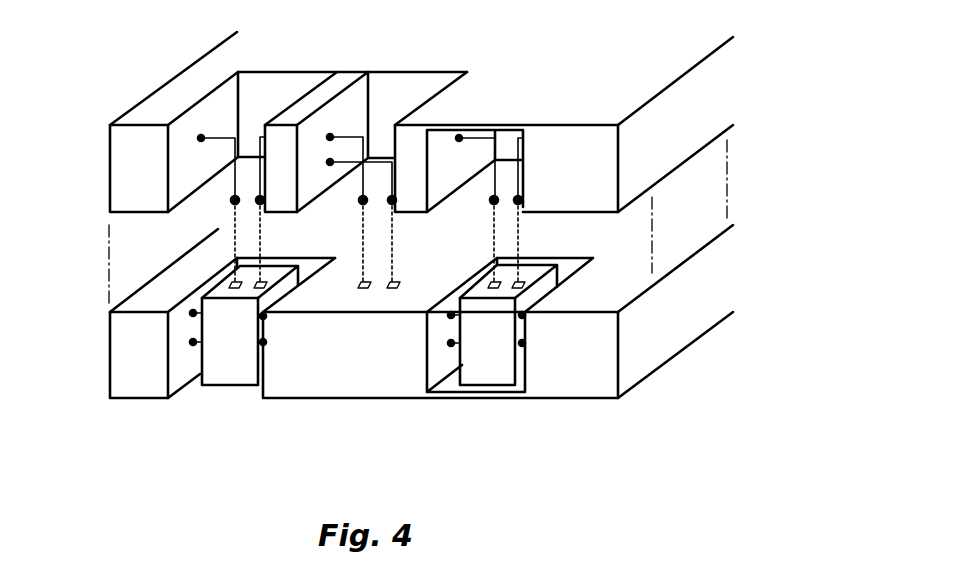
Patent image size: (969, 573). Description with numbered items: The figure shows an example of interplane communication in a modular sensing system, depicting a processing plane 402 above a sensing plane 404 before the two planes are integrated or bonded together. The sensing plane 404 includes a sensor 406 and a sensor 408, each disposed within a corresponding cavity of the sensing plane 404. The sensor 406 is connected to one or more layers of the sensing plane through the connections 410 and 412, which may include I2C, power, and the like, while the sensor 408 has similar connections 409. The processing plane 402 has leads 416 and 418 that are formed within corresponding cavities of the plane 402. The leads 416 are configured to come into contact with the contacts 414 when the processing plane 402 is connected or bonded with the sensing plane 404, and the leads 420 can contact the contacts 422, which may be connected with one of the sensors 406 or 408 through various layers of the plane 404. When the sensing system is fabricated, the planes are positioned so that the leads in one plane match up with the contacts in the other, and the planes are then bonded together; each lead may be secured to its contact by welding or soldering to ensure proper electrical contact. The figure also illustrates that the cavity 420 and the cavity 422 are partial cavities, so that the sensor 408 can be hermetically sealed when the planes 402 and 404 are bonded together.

The processing plane 402 is at (110, 160).
The sensing plane 404 is at (110, 345).
The sensor 406 is at (227, 386).
The sensor 408 is at (550, 382).
The connections 409 is at (450, 316).
The connections 410 is at (193, 342).
The connections 412 is at (264, 318).
The contacts 414 is at (240, 283).
The leads 416 is at (221, 136).
The leads 418 is at (533, 137).
The leads 420 is at (391, 150).
The contacts 422 is at (342, 276).